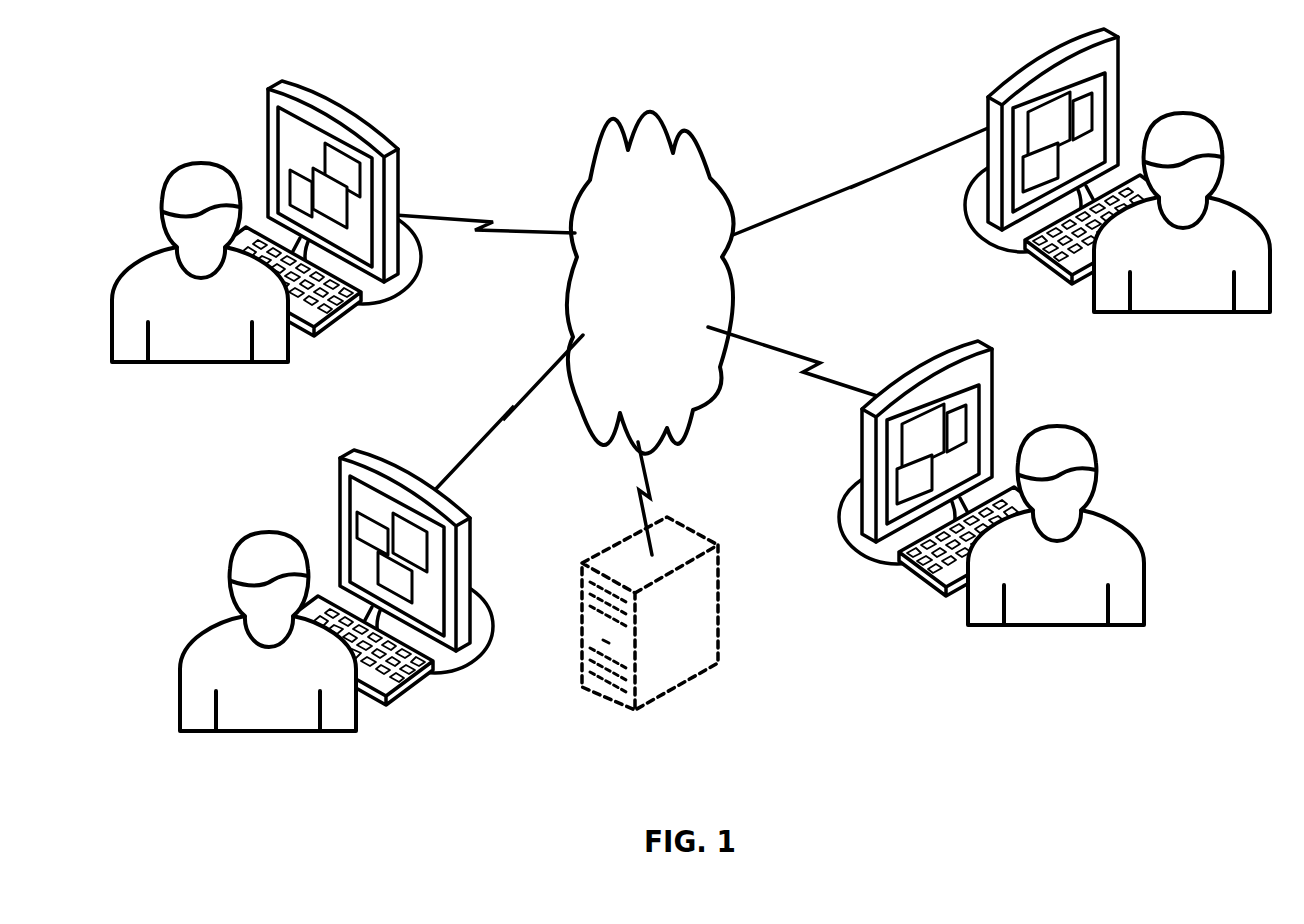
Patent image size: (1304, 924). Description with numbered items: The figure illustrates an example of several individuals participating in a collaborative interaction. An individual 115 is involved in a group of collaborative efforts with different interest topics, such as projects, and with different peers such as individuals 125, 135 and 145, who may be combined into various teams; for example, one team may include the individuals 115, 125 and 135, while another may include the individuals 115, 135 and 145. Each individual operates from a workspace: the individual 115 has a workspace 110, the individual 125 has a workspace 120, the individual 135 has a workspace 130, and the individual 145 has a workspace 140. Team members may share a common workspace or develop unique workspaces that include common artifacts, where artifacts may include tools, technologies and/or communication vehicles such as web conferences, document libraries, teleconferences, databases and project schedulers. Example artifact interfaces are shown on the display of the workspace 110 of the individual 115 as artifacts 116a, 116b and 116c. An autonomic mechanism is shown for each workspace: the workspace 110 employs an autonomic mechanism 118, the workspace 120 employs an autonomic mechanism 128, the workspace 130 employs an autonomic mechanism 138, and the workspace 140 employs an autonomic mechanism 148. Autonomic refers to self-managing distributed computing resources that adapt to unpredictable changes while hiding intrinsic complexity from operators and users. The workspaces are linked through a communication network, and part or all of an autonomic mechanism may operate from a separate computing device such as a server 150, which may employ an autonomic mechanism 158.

The workspace 110 is at (293, 157).
The individual 115 is at (175, 197).
The artifact 116a is at (342, 167).
The artifact 116b is at (335, 203).
The artifact 116c is at (310, 213).
The autonomic mechanism 118 is at (385, 343).
The workspace 120 is at (1093, 78).
The individual 125 is at (1205, 147).
The autonomic mechanism 128 is at (975, 266).
The workspace 130 is at (975, 407).
The individual 135 is at (1080, 458).
The autonomic mechanism 138 is at (849, 578).
The workspace 140 is at (357, 497).
The individual 145 is at (245, 567).
The autonomic mechanism 148 is at (485, 701).
The server 150 is at (675, 337).
The autonomic mechanism 158 is at (755, 697).